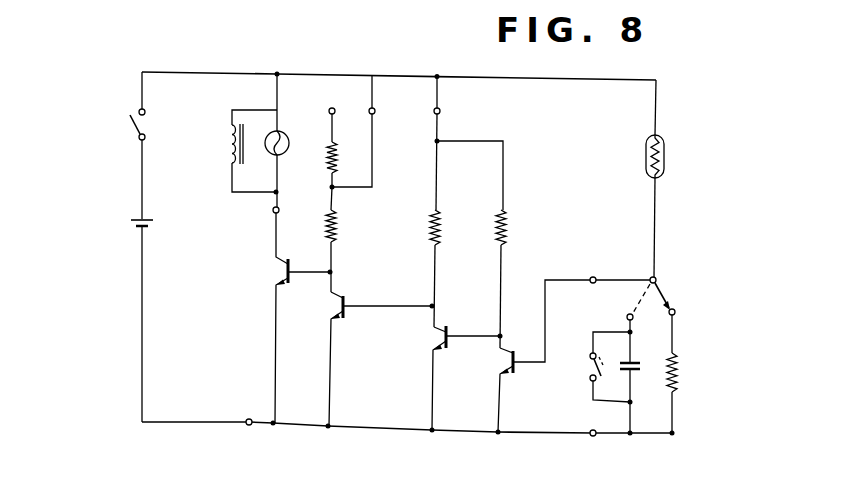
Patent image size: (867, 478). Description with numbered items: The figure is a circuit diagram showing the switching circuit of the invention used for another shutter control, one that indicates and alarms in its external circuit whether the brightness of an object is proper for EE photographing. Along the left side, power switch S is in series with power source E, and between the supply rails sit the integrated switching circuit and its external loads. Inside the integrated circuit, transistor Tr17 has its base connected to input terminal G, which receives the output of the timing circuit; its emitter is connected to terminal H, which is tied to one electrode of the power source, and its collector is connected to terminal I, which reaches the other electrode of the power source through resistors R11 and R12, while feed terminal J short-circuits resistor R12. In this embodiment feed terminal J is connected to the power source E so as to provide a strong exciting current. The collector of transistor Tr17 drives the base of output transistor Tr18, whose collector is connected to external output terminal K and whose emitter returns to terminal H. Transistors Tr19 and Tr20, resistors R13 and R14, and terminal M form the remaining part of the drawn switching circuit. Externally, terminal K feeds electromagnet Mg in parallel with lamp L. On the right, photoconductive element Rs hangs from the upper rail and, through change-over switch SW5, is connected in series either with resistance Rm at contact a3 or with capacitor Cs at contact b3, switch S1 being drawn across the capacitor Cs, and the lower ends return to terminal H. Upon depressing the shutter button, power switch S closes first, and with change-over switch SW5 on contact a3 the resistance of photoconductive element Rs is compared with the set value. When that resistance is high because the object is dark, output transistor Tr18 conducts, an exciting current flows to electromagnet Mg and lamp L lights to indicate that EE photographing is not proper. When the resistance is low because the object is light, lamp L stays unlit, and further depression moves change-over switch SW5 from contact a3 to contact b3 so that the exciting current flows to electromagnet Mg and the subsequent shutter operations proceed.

The power switch S is at (127, 137).
The power source E is at (148, 232).
The electromagnet Mg is at (228, 138).
The lamp L is at (302, 150).
The external output terminal K is at (284, 212).
The output transistor Tr18 is at (302, 318).
The collector terminal I is at (330, 108).
The feed terminal J is at (375, 109).
The resistor R12 is at (346, 175).
The resistor R11 is at (346, 244).
The transistor Tr20 is at (354, 292).
The terminal M is at (440, 111).
The resistor R14 is at (450, 247).
The resistor R13 is at (516, 247).
The transistor Tr19 is at (457, 326).
The transistor Tr17 is at (525, 366).
The input terminal G is at (592, 270).
The photoconductive element Rs is at (666, 150).
The change-over switch SW5 is at (664, 300).
The contact b3 is at (627, 317).
The contact a3 is at (676, 318).
The capacitor Cs is at (636, 372).
The switch S1 is at (590, 370).
The resistance Rm is at (678, 385).
The feed terminal H is at (593, 436).